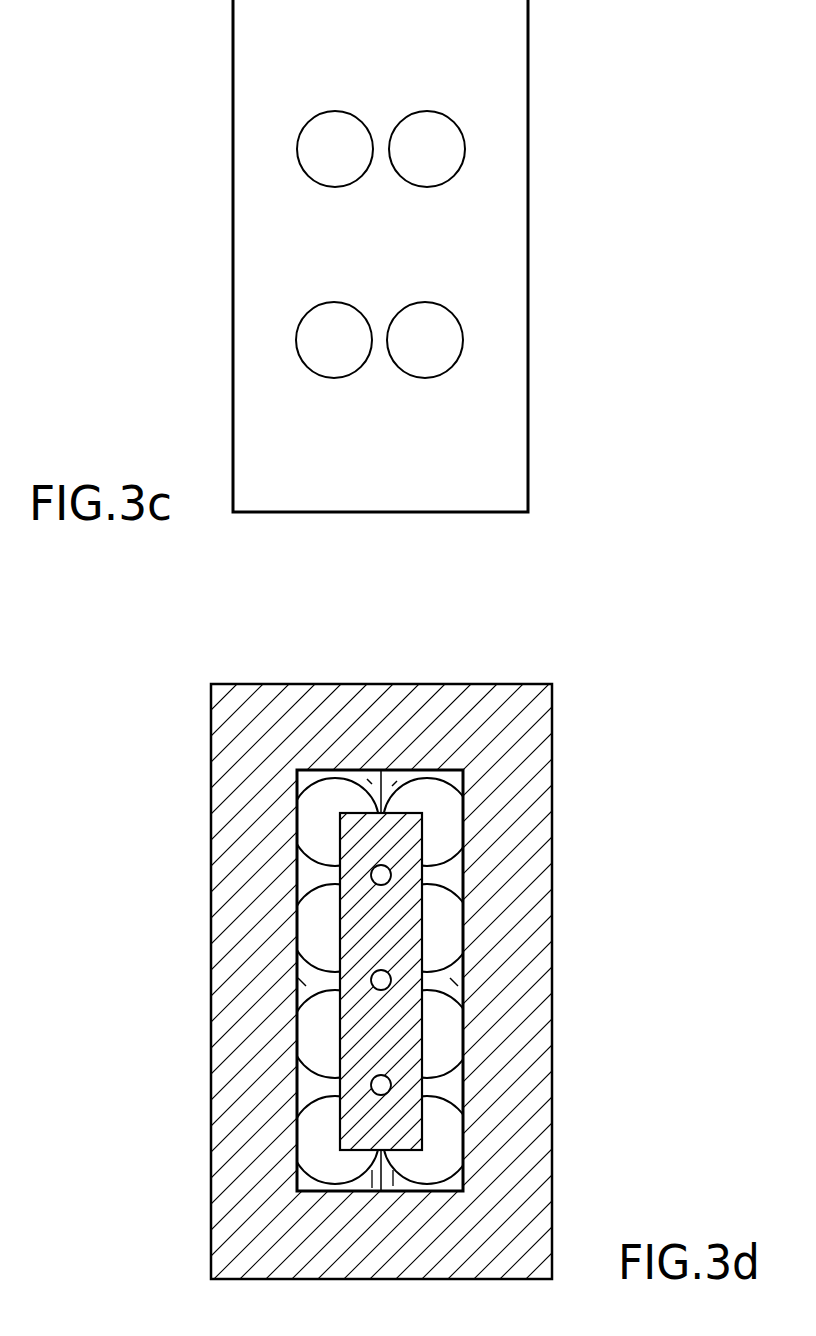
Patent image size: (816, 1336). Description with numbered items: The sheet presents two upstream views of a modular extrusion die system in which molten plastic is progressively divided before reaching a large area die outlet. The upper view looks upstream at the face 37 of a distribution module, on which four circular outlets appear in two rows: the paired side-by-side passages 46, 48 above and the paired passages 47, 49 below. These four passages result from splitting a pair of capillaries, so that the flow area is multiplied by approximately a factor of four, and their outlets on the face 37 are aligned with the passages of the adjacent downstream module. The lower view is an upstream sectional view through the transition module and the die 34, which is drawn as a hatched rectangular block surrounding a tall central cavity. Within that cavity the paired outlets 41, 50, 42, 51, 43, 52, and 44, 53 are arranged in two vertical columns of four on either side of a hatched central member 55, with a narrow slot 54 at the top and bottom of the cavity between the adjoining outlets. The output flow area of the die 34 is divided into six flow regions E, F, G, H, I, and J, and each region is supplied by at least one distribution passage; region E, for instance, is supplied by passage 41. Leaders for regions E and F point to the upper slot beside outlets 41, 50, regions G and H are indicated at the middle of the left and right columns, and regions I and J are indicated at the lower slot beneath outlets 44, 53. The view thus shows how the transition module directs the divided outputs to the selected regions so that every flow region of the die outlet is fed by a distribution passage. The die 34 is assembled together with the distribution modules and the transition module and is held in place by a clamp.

In FIG. 3c, the face 37 is at (503, 27).
In FIG. 3c, the passage 46 is at (350, 163).
In FIG. 3c, the passage 47 is at (349, 354).
In FIG. 3c, the passage 48 is at (442, 163).
In FIG. 3c, the passage 49 is at (440, 354).
In FIG. 3d, the die 34 is at (246, 684).
In FIG. 3d, the outlet 41 is at (328, 831).
In FIG. 3d, the outlet 42 is at (328, 938).
In FIG. 3d, the outlet 43 is at (328, 1042).
In FIG. 3d, the outlet 44 is at (328, 1155).
In FIG. 3d, the outlet 50 is at (456, 831).
In FIG. 3d, the outlet 51 is at (456, 938).
In FIG. 3d, the outlet 52 is at (456, 1042).
In FIG. 3d, the outlet 53 is at (456, 1155).
In FIG. 3d, the slot 54 is at (384, 762).
In FIG. 3d, the spool 55 is at (338, 1087).
In FIG. 3d, the flow region E is at (367, 779).
In FIG. 3d, the flow region F is at (397, 781).
In FIG. 3d, the flow region G is at (304, 983).
In FIG. 3d, the flow region H is at (452, 982).
In FIG. 3d, the flow region I is at (372, 1188).
In FIG. 3d, the flow region J is at (393, 1186).